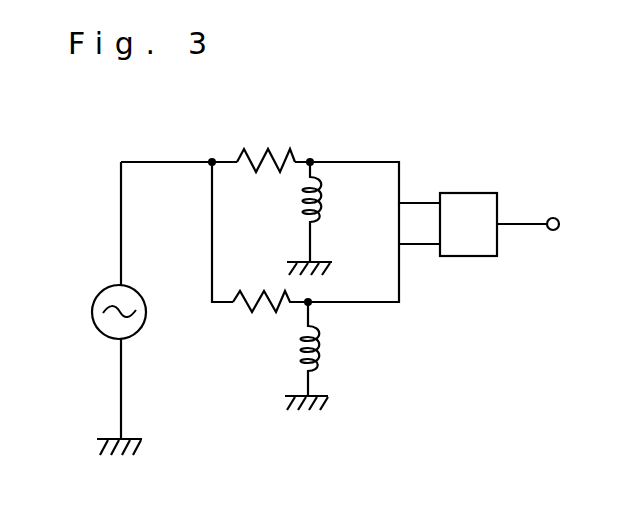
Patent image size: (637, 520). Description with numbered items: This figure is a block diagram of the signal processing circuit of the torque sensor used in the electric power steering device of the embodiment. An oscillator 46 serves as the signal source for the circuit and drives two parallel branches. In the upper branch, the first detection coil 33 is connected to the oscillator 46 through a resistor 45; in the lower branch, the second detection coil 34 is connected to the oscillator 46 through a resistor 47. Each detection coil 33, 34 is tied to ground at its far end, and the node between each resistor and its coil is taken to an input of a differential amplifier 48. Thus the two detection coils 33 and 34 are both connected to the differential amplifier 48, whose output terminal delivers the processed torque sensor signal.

The first detection coil 33 is at (304, 214).
The second detection coil 34 is at (302, 361).
The resistor 45 is at (282, 161).
The oscillator 46 is at (100, 292).
The resistor 47 is at (249, 305).
The differential amplifier 48 is at (474, 247).